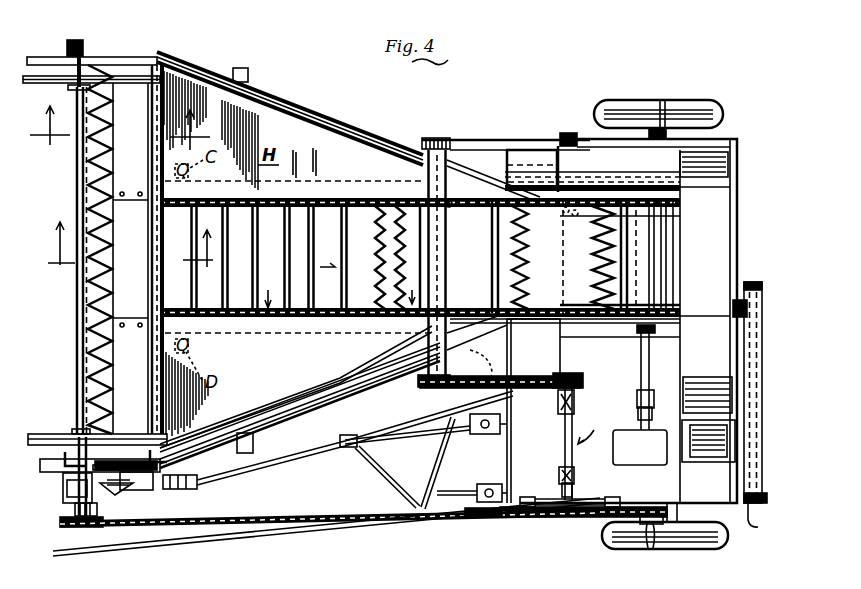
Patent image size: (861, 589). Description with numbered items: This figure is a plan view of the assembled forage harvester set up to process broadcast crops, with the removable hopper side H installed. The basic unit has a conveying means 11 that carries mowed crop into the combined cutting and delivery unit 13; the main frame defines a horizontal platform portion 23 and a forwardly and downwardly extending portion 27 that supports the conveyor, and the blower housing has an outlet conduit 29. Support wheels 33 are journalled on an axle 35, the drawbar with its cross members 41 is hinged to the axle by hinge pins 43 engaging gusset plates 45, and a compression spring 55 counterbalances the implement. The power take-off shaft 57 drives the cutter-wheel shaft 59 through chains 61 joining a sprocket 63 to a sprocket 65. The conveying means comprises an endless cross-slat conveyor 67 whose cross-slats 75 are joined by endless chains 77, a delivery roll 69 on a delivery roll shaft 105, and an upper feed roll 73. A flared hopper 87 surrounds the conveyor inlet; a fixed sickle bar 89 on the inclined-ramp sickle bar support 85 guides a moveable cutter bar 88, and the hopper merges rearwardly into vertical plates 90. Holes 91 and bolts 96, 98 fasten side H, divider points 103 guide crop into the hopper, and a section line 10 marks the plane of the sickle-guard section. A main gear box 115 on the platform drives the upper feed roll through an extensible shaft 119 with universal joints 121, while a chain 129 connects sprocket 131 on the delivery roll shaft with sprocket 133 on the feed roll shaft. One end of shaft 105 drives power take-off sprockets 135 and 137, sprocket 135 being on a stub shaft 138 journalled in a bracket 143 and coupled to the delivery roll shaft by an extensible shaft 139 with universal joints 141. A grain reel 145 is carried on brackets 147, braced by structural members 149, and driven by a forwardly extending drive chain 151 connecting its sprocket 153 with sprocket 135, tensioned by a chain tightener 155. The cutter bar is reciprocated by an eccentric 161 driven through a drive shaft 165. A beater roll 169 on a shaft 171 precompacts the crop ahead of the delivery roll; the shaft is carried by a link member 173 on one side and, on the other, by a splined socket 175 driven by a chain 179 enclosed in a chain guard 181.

The section line arrows 10 is at (123, 128).
The conveying means 11 is at (364, 249).
The cutting and delivery unit 13 is at (738, 220).
The horizontal platform portion 23 is at (590, 430).
The forwardly and downwardly extending portion 27 is at (350, 178).
The outlet conduit 29 is at (735, 433).
The support wheels 33 is at (692, 100).
The axle 35 is at (661, 118).
The cross members 41 is at (438, 458).
The hinge pins 43 is at (652, 525).
The gusset plates 45 is at (672, 538).
The compression spring 55 is at (503, 455).
The power take-off shaft 57 is at (760, 527).
The shaft 59 is at (730, 314).
The chains 61 is at (762, 362).
The sprocket 63 is at (768, 497).
The sprocket 65 is at (758, 302).
The endless cross-slat conveyor 67 is at (273, 317).
The delivery roll 69 is at (660, 216).
The upper feed roll 73 is at (656, 250).
The cross-slats 75 is at (312, 317).
The endless chains 77 is at (237, 317).
The sickle bar support 85 is at (78, 200).
The flared hopper 87 is at (333, 117).
The moveable cutter bar 88 is at (77, 330).
The fixed sickle bar 89 is at (96, 376).
The vertically disposed plates 90 is at (535, 185).
The holes 91 is at (141, 192).
The fastening means 96 is at (173, 173).
The fastening means 98 is at (566, 231).
The divider point 103 is at (53, 57).
The delivery roll shaft 105 is at (562, 133).
The main gear box 115 is at (662, 465).
The extensible power transmission shaft 119 is at (640, 355).
The universal joints 121 is at (655, 340).
The chain 129 is at (607, 172).
The sprocket 131 is at (540, 176).
The sprocket 133 is at (648, 176).
The power take-off sprocket 135 is at (570, 520).
The power take-off sprocket 137 is at (583, 381).
The stub shaft 138 is at (575, 490).
The extensible shaft 139 is at (567, 443).
The universal joints 141 is at (575, 403).
The bracket 143 is at (620, 500).
The grain reel 145 is at (55, 485).
The brackets 147 is at (83, 45).
The structural members 149 is at (223, 68).
The forwardly extending drive chain 151 is at (172, 547).
The sprocket 153 is at (76, 528).
The chain tightener 155 is at (498, 518).
The eccentric 161 is at (131, 498).
The drive shaft 165 is at (355, 439).
The beater roll 169 is at (400, 317).
The shaft 171 is at (444, 138).
The link member 173 is at (473, 140).
The splined socket 175 is at (383, 366).
The chain 179 is at (483, 362).
The chain guard 181 is at (537, 389).